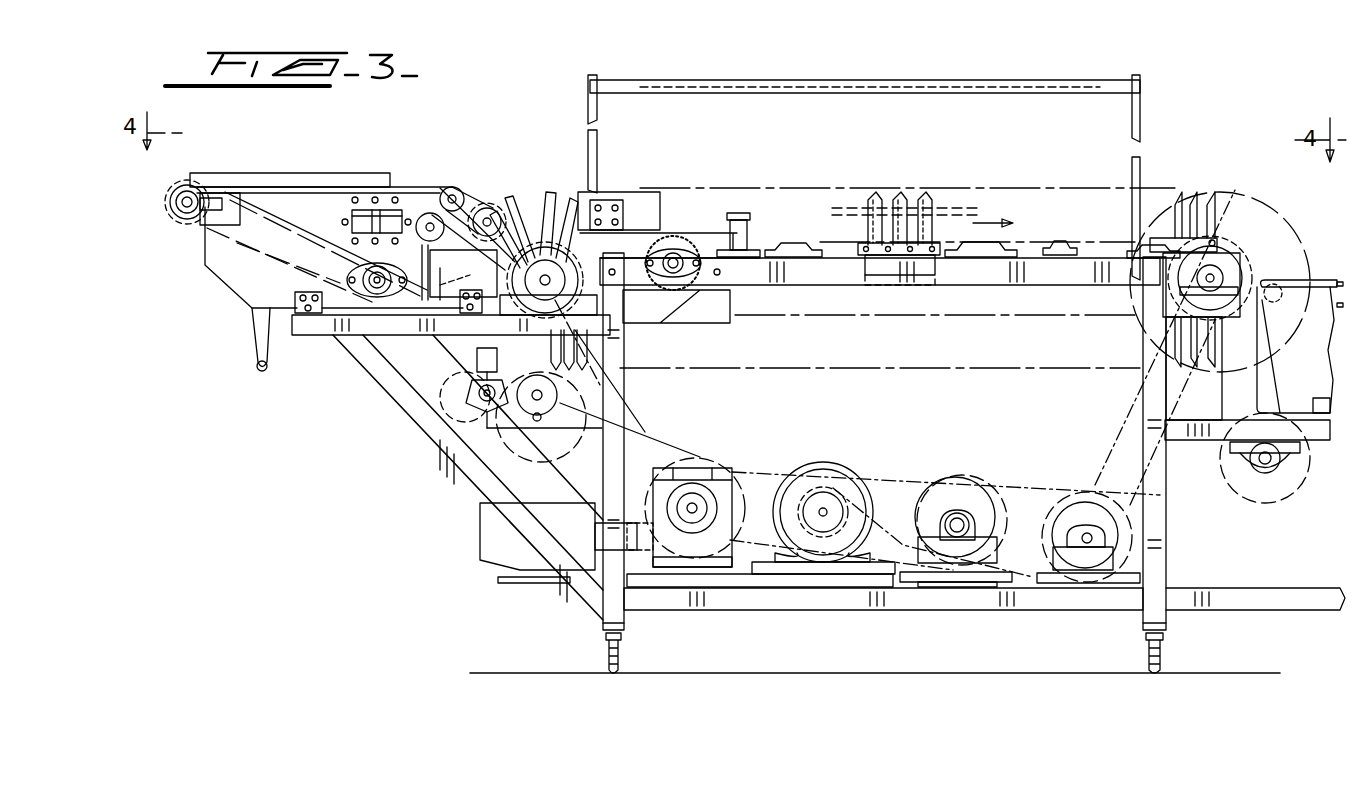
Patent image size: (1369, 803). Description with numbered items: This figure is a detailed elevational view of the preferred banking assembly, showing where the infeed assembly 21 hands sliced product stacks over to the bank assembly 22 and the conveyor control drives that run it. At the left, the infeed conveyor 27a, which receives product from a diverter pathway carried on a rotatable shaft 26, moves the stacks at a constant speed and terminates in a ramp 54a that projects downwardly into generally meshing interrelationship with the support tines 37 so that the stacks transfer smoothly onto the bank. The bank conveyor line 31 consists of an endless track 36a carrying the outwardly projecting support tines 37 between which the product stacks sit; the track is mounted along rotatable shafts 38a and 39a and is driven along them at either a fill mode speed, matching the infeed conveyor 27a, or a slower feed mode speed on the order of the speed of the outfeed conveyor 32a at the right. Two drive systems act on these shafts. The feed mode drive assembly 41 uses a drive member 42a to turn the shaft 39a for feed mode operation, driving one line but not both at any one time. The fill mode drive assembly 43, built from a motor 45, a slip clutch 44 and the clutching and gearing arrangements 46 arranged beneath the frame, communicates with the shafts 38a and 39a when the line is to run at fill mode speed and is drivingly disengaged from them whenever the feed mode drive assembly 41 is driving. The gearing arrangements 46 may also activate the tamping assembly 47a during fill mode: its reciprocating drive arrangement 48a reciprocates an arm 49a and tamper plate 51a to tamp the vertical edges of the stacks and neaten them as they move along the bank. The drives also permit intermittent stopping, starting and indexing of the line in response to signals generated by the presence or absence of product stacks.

The infeed assembly 21 is at (260, 166).
The bank assembly 22 is at (870, 185).
The rotatable shaft 26 is at (178, 203).
The infeed conveyor 27a is at (430, 192).
The conveyor line 31 is at (900, 200).
The outfeed conveyor 32a is at (1322, 280).
The endless track 36a is at (860, 250).
The support tines 37 is at (540, 200).
The rotatable shaft 38a is at (548, 278).
The rotatable shaft 39a is at (1212, 276).
The feed mode drive assembly 41 is at (1258, 490).
The drive member 42a is at (1272, 262).
The fill mode drive assembly 43 is at (905, 473).
The slip clutch 44 is at (1100, 495).
The motor 45 is at (975, 495).
The clutching and gearing arrangements 46 is at (635, 418).
The tamping assembly 47a is at (672, 252).
The reciprocating drive arrangement 48a is at (725, 294).
The arm 49a is at (702, 257).
The tamper plate 51a is at (622, 206).
The ramp 54a is at (460, 258).